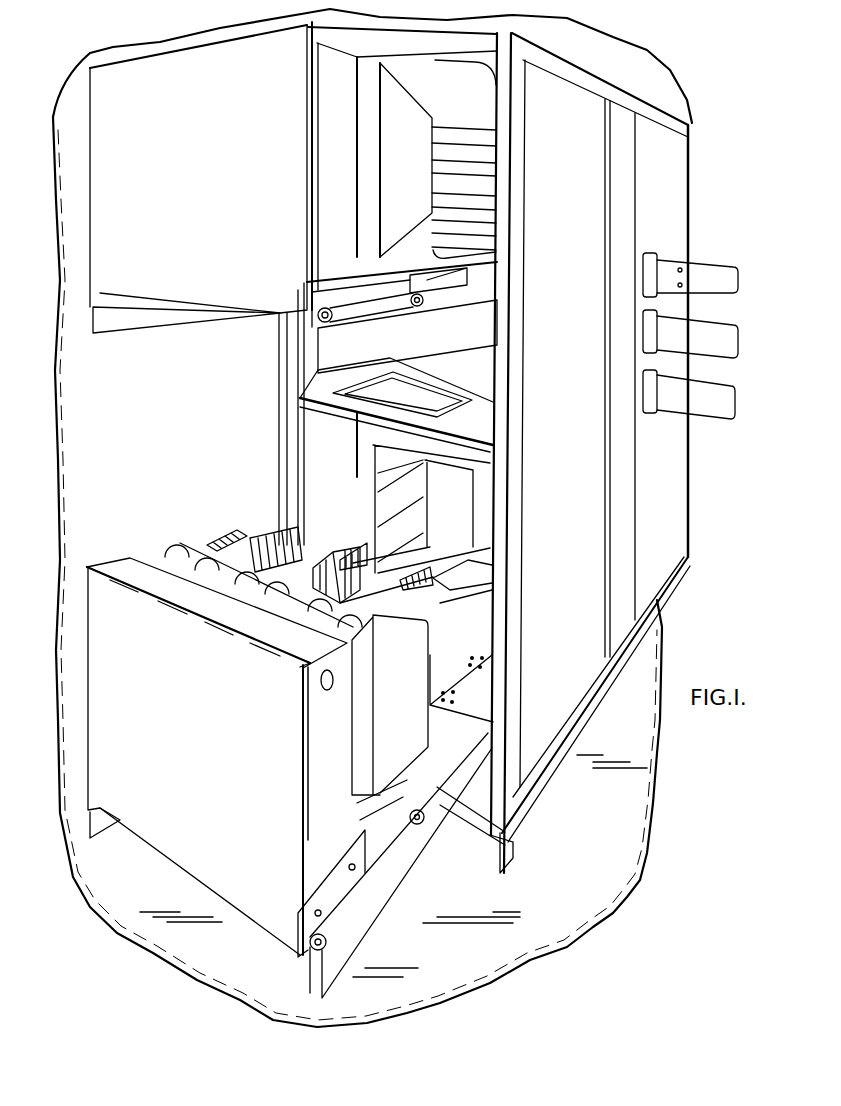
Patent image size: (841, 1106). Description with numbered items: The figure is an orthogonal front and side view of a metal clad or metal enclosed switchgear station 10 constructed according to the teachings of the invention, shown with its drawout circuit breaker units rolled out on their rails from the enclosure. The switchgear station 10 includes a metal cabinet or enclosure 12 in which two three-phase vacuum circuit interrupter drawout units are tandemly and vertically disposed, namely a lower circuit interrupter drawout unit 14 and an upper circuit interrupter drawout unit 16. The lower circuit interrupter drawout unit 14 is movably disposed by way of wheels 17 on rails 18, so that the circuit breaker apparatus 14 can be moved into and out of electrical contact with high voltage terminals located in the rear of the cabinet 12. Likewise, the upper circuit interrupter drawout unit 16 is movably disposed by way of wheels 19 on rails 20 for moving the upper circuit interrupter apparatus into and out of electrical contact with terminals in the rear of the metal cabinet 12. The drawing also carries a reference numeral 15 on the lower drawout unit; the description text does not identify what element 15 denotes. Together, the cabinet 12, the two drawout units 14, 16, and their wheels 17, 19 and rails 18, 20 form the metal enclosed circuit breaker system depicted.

The switchgear station 10 is at (414, 935).
The metal cabinet 12 is at (676, 160).
The lower circuit interrupter drawout unit 14 is at (193, 756).
The drawout flange 15 is at (197, 856).
The upper circuit interrupter drawout unit 16 is at (192, 188).
The wheels 17 is at (421, 809).
The rails 18 is at (115, 827).
The wheels 19 is at (417, 309).
The rails 20 is at (155, 323).